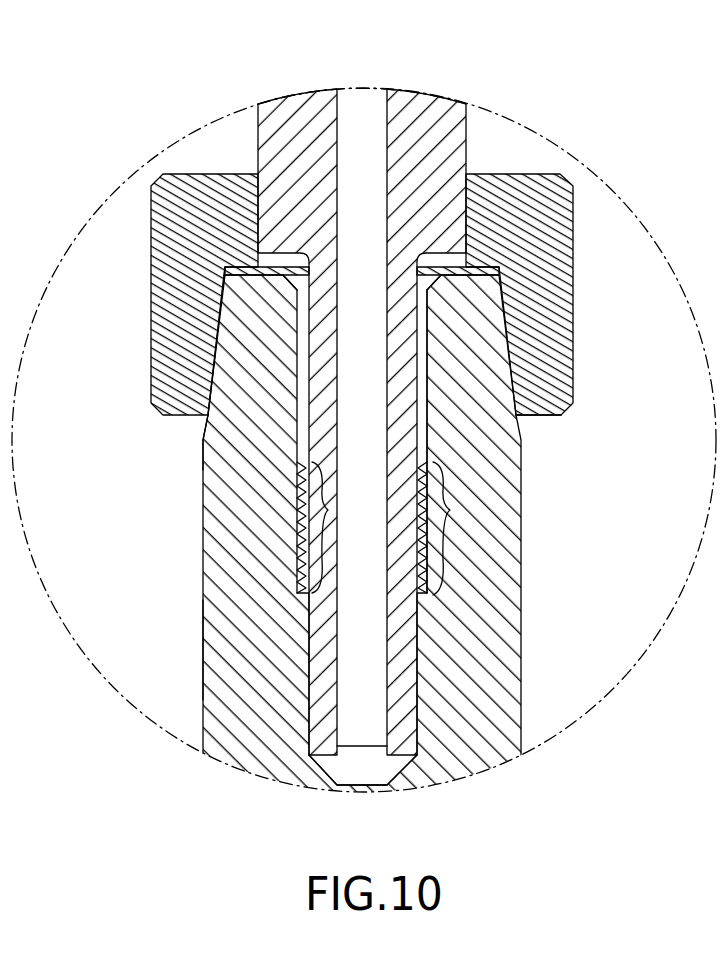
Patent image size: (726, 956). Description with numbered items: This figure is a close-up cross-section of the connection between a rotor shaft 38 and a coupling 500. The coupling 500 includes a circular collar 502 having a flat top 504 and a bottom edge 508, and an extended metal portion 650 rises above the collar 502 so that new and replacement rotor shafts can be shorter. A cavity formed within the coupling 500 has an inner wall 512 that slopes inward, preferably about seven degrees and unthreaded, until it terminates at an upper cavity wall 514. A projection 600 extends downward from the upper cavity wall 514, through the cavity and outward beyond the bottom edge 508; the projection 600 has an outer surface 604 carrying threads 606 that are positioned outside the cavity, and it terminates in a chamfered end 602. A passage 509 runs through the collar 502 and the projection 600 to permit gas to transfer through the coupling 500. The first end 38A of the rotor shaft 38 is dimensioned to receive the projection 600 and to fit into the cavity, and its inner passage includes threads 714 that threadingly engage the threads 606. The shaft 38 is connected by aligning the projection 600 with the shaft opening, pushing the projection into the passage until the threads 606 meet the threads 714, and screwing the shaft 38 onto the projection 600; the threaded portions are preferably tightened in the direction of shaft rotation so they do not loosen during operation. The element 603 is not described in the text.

The coupling 500 is at (558, 154).
The rotor shaft 38 is at (528, 646).
The first end 38A is at (207, 420).
The outer surface 604 is at (309, 667).
The chamfered end 602 is at (410, 760).
The passage 509 is at (356, 100).
The extended metal portion 650 is at (475, 115).
The threads 714 is at (330, 512).
The projection 600 is at (305, 447).
The threads 606 is at (450, 510).
The upper cavity wall 514 is at (420, 274).
The channel 603 is at (417, 358).
The flat top 504 is at (207, 172).
The inner wall 512 is at (207, 378).
The collar 502 is at (574, 220).
The bottom edge 508 is at (545, 420).